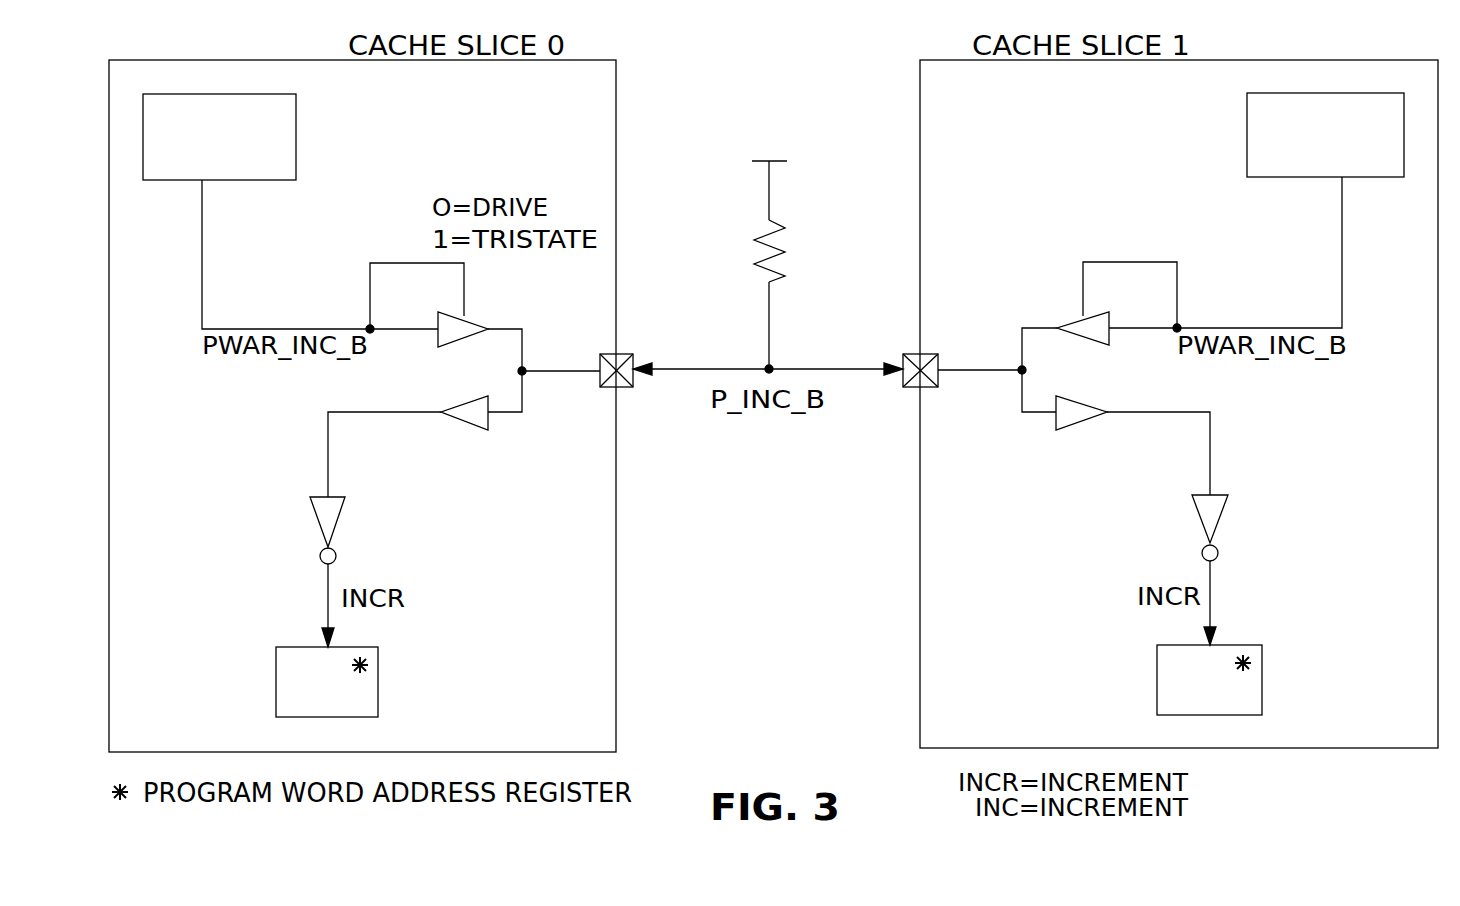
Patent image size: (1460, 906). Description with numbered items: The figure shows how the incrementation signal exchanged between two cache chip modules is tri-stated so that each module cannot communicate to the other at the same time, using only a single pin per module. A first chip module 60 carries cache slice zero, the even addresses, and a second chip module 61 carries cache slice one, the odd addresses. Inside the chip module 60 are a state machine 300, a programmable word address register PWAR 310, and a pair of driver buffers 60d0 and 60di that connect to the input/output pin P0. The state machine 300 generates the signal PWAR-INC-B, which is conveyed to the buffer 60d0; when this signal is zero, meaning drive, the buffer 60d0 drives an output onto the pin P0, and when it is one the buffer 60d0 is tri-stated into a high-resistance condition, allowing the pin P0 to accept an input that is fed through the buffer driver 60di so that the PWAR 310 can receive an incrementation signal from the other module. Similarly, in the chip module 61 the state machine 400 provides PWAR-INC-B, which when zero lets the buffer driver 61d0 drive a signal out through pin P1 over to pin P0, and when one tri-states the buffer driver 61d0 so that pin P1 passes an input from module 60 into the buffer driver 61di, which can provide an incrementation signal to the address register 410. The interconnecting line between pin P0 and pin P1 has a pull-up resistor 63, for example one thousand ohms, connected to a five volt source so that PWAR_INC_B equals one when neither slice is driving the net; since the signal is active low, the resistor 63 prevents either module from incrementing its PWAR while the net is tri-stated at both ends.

The first chip module 60 is at (216, 60).
The second chip module 61 is at (1330, 59).
The state machine 300 is at (296, 137).
The state machine 400 is at (1247, 127).
The programmable word address register (PWAR) 310 is at (276, 672).
The address register (PWAR) 410 is at (1262, 695).
The pull-up resistor 63 is at (756, 236).
The buffer driver 60d0 is at (470, 322).
The buffer driver 60di is at (478, 425).
The buffer driver 61d0 is at (1070, 325).
The buffer driver 61di is at (1073, 420).
The input/output pin P0 is at (633, 387).
The input/output pin P1 is at (903, 387).